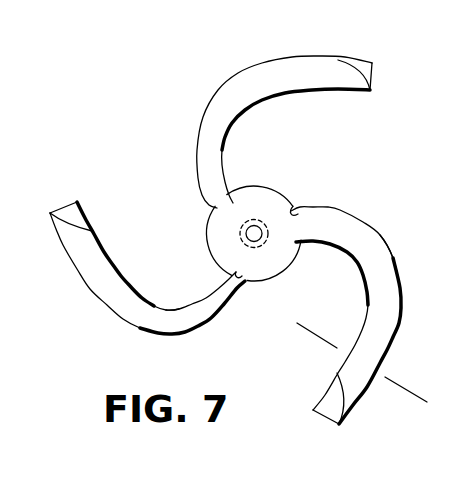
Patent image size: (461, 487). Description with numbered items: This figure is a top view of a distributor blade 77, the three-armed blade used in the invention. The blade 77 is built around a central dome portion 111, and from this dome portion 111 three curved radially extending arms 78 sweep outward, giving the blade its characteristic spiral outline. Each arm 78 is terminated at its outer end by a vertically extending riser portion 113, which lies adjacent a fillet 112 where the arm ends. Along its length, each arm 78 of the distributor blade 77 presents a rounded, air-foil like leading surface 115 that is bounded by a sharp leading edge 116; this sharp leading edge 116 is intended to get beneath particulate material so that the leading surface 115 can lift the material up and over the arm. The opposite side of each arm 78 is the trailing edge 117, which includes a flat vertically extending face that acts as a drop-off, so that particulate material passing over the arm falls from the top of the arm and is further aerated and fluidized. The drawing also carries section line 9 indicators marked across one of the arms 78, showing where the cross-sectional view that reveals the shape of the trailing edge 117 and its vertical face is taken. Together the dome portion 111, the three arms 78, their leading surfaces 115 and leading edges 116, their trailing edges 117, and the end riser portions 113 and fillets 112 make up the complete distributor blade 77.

The distributor blade 77 is at (260, 177).
The curved radially extending arms 78 is at (233, 85).
The dome portion 111 is at (272, 210).
The fillet 112 is at (339, 61).
The riser portion 113 is at (375, 78).
The leading surface 115 is at (383, 275).
The leading edge 116 is at (402, 311).
The trailing edge 117 is at (368, 300).
The section line 9- 9 is at (309, 343).